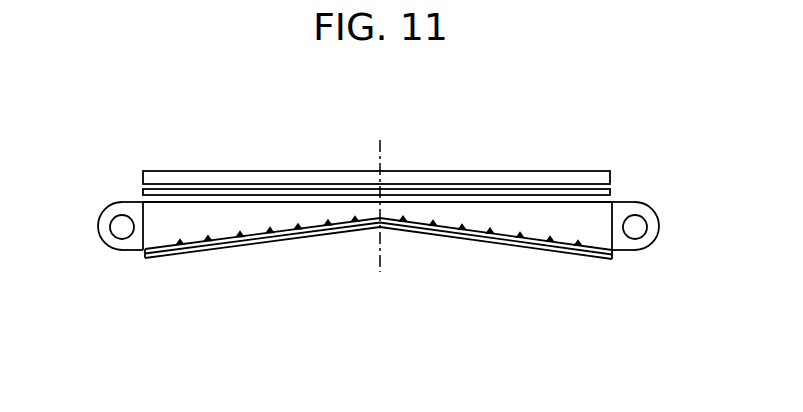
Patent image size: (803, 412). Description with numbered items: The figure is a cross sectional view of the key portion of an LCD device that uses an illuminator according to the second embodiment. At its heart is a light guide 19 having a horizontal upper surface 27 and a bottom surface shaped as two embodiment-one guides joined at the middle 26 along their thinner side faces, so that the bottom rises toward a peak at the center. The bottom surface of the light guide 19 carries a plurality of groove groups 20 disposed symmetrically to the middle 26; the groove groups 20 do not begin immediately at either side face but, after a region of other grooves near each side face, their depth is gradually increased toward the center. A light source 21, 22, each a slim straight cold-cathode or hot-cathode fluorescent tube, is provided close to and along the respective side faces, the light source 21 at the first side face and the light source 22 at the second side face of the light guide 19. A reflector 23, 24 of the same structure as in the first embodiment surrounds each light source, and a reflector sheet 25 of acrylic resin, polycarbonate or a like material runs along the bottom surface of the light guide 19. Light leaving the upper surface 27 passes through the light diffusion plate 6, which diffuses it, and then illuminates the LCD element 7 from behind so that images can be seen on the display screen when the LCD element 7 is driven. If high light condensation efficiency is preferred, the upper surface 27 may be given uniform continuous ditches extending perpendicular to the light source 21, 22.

The light diffusion plate 6 is at (555, 195).
The LCD element 7 is at (287, 172).
The light guide 19 is at (202, 222).
The groove groups 20 is at (267, 226).
The light source 21 is at (122, 228).
The light source 22 is at (642, 240).
The reflector 23 is at (113, 205).
The reflector 24 is at (648, 206).
The reflector sheet 25 is at (515, 248).
The middle 26 is at (381, 270).
The upper surface 27 is at (461, 202).